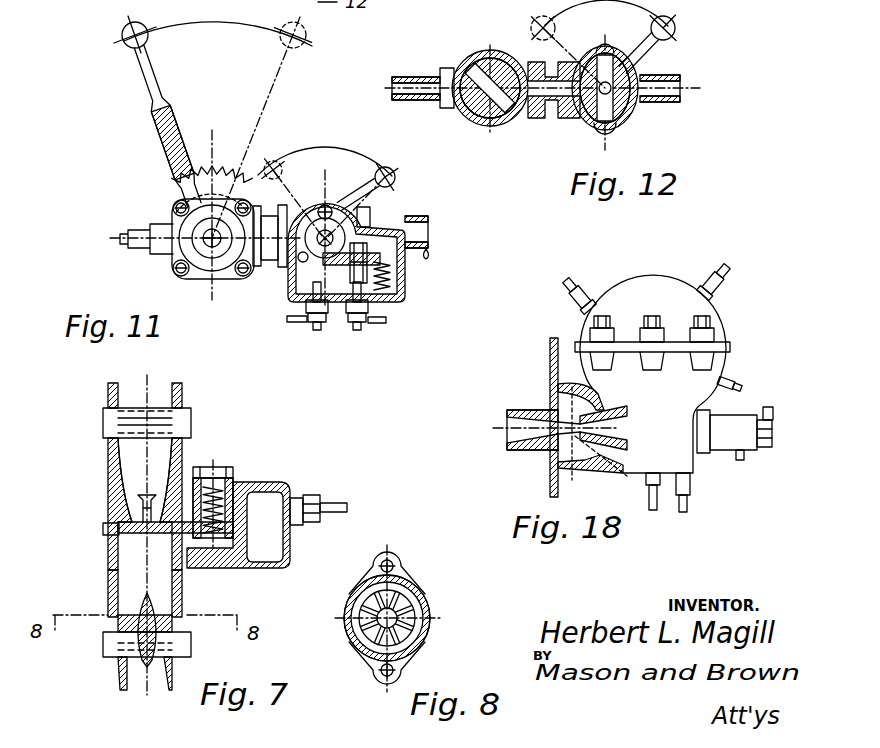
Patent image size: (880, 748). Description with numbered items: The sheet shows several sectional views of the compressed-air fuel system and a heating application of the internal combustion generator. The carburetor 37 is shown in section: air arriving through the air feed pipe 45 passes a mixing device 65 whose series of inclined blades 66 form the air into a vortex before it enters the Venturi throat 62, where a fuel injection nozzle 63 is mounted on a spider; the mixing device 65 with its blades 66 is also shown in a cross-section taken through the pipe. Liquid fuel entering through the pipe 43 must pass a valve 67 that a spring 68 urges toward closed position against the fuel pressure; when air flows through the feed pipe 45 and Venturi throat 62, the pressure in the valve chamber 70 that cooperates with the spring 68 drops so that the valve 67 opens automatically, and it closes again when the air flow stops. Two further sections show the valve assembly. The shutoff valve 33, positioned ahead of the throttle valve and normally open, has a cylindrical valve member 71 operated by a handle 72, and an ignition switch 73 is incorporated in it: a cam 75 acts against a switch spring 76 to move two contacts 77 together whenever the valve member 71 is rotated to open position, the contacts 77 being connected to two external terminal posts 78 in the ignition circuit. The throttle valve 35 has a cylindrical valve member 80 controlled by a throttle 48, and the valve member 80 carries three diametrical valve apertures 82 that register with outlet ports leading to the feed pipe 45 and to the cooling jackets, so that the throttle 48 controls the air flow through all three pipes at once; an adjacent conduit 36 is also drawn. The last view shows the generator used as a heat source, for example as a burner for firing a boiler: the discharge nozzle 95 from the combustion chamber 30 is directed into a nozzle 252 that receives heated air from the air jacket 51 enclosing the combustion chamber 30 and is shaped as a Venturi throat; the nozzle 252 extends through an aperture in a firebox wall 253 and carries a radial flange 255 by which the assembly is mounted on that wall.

In FIG. 11, the throttle 48 is at (155, 68).
In FIG. 11, the throttle valve 35 is at (218, 278).
In FIG. 12, the throttle valve 35 is at (470, 56).
In FIG. 11, the handle 72 is at (396, 178).
In FIG. 12, the handle 72 is at (676, 28).
In FIG. 11, the cam 75 is at (370, 208).
In FIG. 11, the fuel conduit 36 is at (429, 224).
In FIG. 12, the fuel conduit 36 is at (682, 110).
In FIG. 11, the switch spring 76 is at (372, 278).
In FIG. 11, the shutoff valve 33 is at (408, 290).
In FIG. 12, the shutoff valve 33 is at (580, 125).
In FIG. 11, the contacts 77 is at (400, 290).
In FIG. 11, the ignition switch 73 is at (396, 302).
In FIG. 11, the terminal posts 78 is at (360, 333).
In FIG. 12, the cylindrical valve member 80 is at (465, 60).
In FIG. 12, the valve apertures 82 is at (468, 117).
In FIG. 12, the cylindrical valve member 71 is at (643, 125).
In FIG. 12, the air feed pipe 45 is at (392, 102).
In FIG. 7, the air feed pipe 45 is at (183, 390).
In FIG. 7, the carburetor 37 is at (104, 445).
In FIG. 8, the carburetor 37 is at (410, 582).
In FIG. 7, the Venturi throat 62 is at (140, 476).
In FIG. 7, the fuel injection nozzle 63 is at (146, 494).
In FIG. 7, the valve chamber 70 is at (232, 515).
In FIG. 7, the spring 68 is at (215, 511).
In FIG. 7, the valve 67 is at (232, 545).
In FIG. 7, the pipe 43 is at (325, 500).
In FIG. 7, the inclined blades 66 is at (181, 606).
In FIG. 8, the inclined blades 66 is at (362, 652).
In FIG. 7, the mixing device 65 is at (110, 640).
In FIG. 8, the mixing device 65 is at (420, 597).
In FIG. 18, the air jacket 51 is at (618, 284).
In FIG. 18, the combustion chamber 30 is at (679, 270).
In FIG. 18, the firebox wall 253 is at (552, 338).
In FIG. 18, the radial flange 255 is at (562, 368).
In FIG. 18, the nozzle 252 is at (520, 408).
In FIG. 18, the discharge nozzle 95 is at (612, 422).